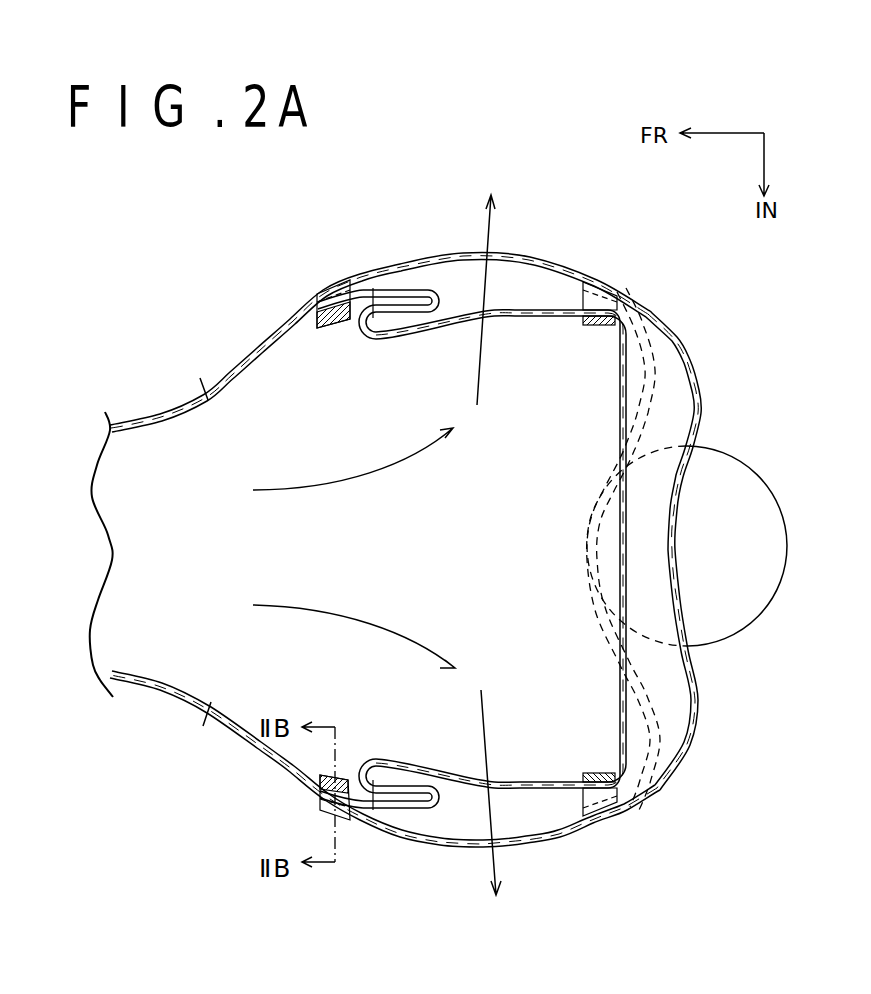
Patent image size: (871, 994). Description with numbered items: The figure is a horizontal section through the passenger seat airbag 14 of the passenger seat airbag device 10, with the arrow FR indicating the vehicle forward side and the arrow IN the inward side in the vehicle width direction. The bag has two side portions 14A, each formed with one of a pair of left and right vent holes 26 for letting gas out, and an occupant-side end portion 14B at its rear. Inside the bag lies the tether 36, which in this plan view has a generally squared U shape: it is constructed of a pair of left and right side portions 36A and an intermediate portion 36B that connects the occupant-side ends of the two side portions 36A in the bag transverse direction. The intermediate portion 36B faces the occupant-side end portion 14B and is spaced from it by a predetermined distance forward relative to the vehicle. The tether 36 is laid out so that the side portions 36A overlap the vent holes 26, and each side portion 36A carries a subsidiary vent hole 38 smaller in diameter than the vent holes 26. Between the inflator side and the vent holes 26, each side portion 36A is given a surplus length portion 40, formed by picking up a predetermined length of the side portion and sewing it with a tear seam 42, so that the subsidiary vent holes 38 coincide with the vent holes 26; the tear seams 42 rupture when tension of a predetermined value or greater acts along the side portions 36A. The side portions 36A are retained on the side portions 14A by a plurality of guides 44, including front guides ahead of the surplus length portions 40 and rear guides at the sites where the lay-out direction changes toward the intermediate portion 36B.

The passenger seat airbag device 10 is at (762, 362).
The passenger seat airbag 14 is at (683, 327).
The side portions 14A is at (540, 258).
The occupant-side end portion 14B is at (700, 413).
The vent holes 26 is at (445, 264).
The tether 36 is at (645, 748).
The side portions 36A is at (560, 317).
The intermediate portion 36B is at (627, 570).
The subsidiary vent holes 38 is at (493, 317).
The surplus length portion 40 is at (405, 290).
The tear seam 42 is at (372, 291).
The guides 44 is at (330, 323).